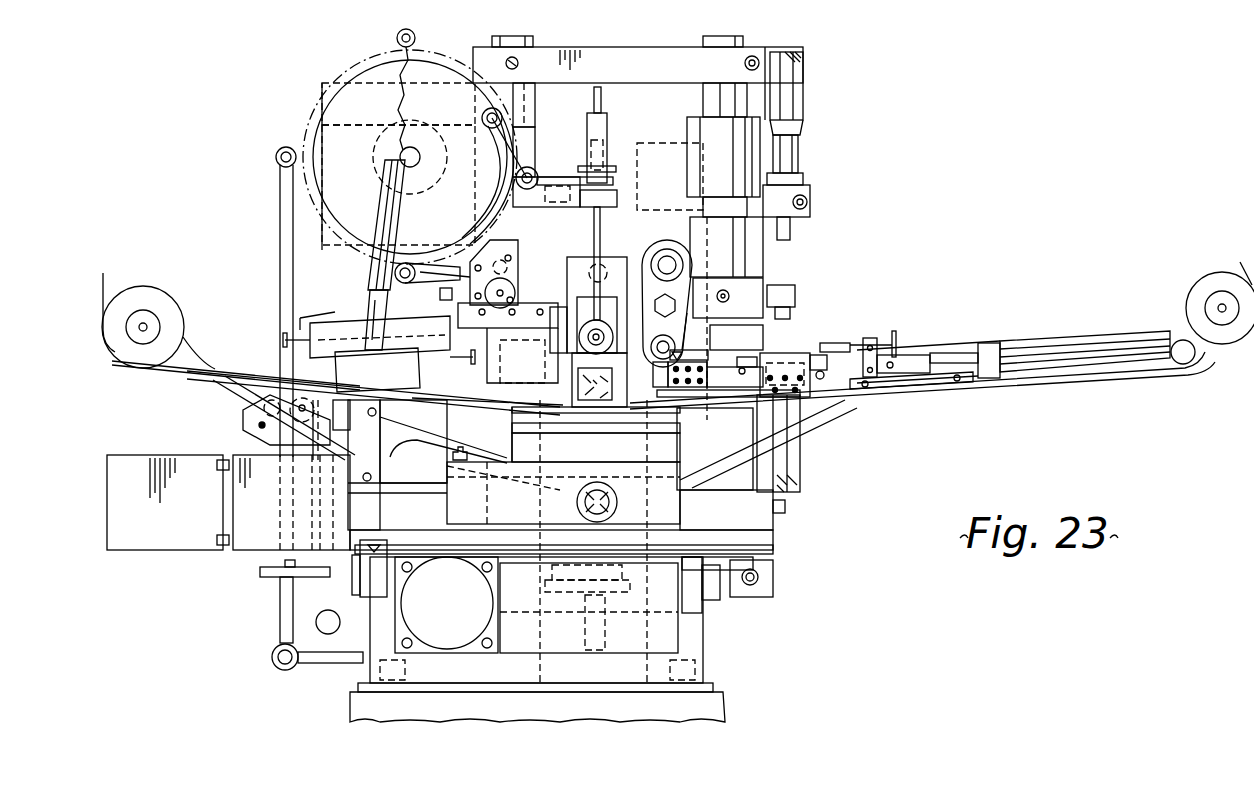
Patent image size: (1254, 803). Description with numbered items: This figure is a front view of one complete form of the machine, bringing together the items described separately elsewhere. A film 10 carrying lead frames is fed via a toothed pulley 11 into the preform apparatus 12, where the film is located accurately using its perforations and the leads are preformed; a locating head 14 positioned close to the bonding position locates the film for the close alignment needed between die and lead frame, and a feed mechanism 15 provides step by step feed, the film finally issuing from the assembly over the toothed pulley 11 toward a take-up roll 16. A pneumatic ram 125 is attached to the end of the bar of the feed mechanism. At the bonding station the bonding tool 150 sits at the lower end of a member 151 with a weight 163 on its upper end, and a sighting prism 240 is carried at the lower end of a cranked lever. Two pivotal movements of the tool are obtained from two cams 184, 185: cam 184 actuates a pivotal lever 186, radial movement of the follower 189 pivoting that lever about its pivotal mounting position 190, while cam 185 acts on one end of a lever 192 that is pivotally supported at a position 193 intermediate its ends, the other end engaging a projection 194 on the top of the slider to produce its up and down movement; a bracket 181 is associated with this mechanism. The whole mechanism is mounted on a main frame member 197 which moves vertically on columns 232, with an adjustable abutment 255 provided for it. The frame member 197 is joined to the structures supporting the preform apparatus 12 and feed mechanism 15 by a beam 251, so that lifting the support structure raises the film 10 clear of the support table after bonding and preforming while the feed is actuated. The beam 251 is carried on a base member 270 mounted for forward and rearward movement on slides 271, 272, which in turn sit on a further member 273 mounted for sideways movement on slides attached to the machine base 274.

The film 10 is at (108, 285).
The toothed pulley 11 is at (172, 310).
The preform apparatus 12 is at (350, 303).
The locating head 14 is at (718, 352).
The feed mechanism 15 is at (770, 345).
The take-up roll 16 is at (1203, 284).
The pneumatic ram 125 is at (1072, 320).
The bonding tool 150 is at (578, 352).
The member 151 is at (594, 220).
The weight 163 is at (607, 125).
The bracket 181 is at (565, 185).
The cam 184 is at (358, 66).
The cam 185 is at (340, 84).
The pivotal lever 186 is at (278, 207).
The follower 189 is at (280, 152).
The pivotal mounting position 190 is at (262, 425).
The lever 192 is at (522, 270).
The pivotal support position 193 is at (490, 232).
The projection 194 is at (650, 262).
The main frame member 197 is at (690, 156).
The columns 232 is at (535, 96).
The prism 240 is at (578, 388).
The beam 251 is at (240, 380).
The adjustable abutment 255 is at (790, 237).
The base member 270 is at (765, 530).
The slide 271 is at (725, 548).
The slide 272 is at (374, 543).
The further member 273 is at (680, 627).
The machine base 274 is at (705, 700).